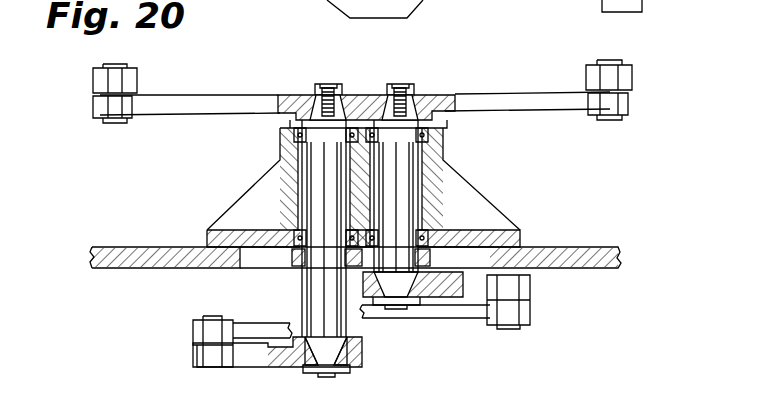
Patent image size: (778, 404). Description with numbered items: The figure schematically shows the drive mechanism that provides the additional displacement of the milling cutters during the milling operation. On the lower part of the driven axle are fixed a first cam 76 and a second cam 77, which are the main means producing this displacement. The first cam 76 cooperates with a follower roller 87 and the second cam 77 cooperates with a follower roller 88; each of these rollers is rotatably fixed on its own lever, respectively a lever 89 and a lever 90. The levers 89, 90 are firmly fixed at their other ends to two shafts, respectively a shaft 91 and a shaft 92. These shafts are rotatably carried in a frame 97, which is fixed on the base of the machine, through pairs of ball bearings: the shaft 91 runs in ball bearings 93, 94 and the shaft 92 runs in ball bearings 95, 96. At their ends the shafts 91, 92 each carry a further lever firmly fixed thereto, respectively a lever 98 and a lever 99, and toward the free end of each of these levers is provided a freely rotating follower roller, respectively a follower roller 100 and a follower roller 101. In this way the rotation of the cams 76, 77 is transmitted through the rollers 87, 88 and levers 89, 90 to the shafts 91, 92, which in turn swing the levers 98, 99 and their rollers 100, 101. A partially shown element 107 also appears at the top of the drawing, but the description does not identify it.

The first cam 76 is at (456, 318).
The second cam 77 is at (256, 328).
The follower roller 87 is at (200, 333).
The follower roller 88 is at (521, 308).
The lever 89 is at (246, 362).
The lever 90 is at (440, 288).
The shaft 91 is at (316, 308).
The shaft 92 is at (408, 204).
The ball bearing 93 is at (294, 135).
The ball bearing 94 is at (278, 269).
The ball bearing 95 is at (430, 135).
The ball bearing 96 is at (434, 252).
The frame 97 is at (283, 172).
The lever 98 is at (230, 100).
The lever 99 is at (512, 94).
The follower roller 100 is at (128, 80).
The follower roller 101 is at (622, 76).
The hexagonal member 107 is at (420, 1).